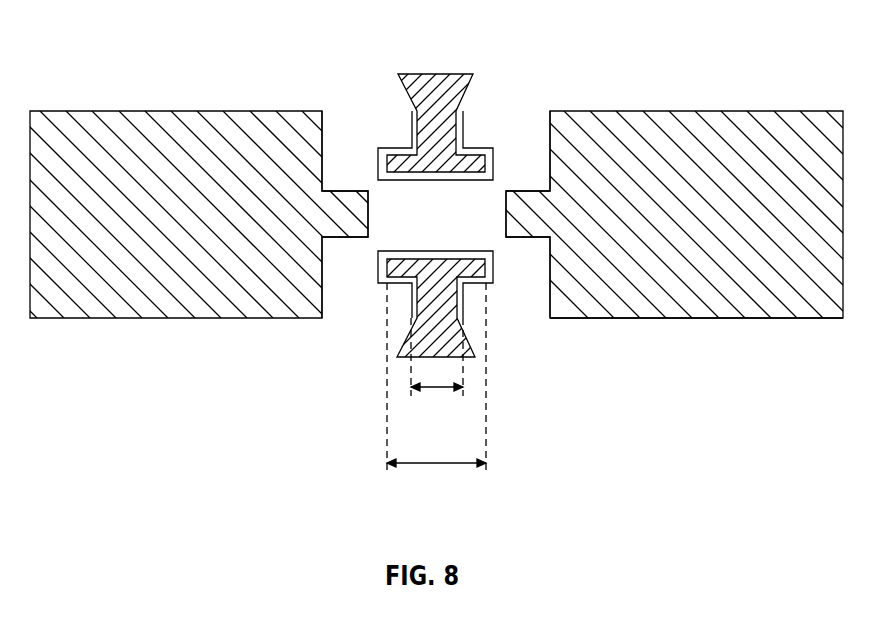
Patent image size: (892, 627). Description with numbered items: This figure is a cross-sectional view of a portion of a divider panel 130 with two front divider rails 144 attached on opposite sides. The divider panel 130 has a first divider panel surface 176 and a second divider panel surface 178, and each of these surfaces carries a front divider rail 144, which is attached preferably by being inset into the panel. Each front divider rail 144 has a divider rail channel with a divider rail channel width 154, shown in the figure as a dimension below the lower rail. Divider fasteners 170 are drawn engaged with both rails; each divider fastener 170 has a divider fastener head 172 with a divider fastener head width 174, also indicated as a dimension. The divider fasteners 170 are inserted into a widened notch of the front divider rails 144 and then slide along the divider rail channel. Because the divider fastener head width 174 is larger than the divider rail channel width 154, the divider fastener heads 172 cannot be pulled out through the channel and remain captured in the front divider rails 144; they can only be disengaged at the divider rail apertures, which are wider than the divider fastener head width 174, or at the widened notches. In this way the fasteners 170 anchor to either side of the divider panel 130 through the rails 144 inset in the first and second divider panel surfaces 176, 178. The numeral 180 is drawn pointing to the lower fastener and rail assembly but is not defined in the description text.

The divider panel 130 is at (142, 128).
The front divider rail 144 is at (517, 137).
The divider rail channel width 154 is at (437, 392).
The divider fastener 170 is at (428, 109).
The divider fastener head 172 is at (472, 160).
The divider fastener head width 174 is at (437, 465).
The first divider panel surface 176 is at (693, 110).
The second divider panel surface 178 is at (718, 318).
The second T-shaped connector 180 is at (382, 273).